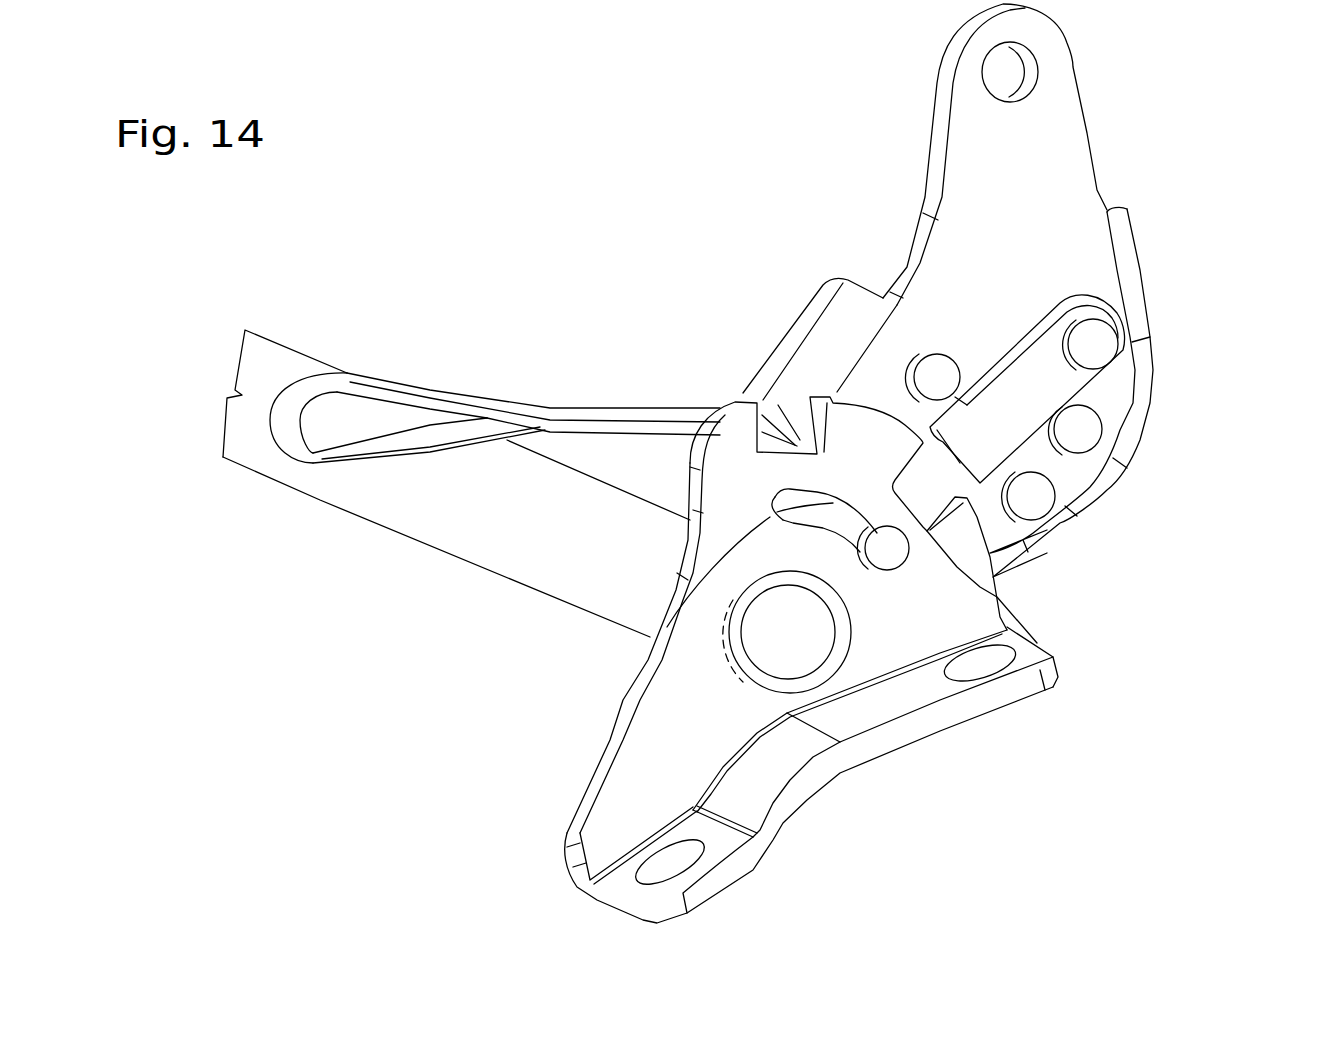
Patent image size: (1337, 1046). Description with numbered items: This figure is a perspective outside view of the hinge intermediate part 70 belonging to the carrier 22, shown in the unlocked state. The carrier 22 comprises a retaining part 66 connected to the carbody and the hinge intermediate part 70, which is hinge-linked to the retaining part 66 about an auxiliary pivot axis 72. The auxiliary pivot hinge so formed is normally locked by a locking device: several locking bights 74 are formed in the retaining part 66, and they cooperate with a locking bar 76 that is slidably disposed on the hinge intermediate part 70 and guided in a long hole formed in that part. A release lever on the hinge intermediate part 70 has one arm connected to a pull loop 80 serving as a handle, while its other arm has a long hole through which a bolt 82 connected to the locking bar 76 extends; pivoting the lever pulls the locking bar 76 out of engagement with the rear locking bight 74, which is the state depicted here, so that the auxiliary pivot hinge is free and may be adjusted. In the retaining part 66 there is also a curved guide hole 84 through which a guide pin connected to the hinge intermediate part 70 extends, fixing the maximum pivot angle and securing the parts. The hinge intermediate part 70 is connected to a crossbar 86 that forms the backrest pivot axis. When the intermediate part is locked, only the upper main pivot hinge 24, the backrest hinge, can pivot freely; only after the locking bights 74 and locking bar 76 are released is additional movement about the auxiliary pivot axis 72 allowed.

The carrier 22 is at (1222, 723).
The upper main pivot hinge 24 is at (1007, 68).
The retaining part 66 is at (620, 790).
The hinge intermediate part 70 is at (1045, 188).
The auxiliary pivot axis 72 is at (783, 630).
The locking bight 74 is at (1050, 647).
The locking bar 76 is at (1028, 420).
The pull loop 80 is at (570, 423).
The bolt 82 is at (1102, 358).
The curved guide hole 84 is at (647, 637).
The crossbar 86 is at (265, 370).